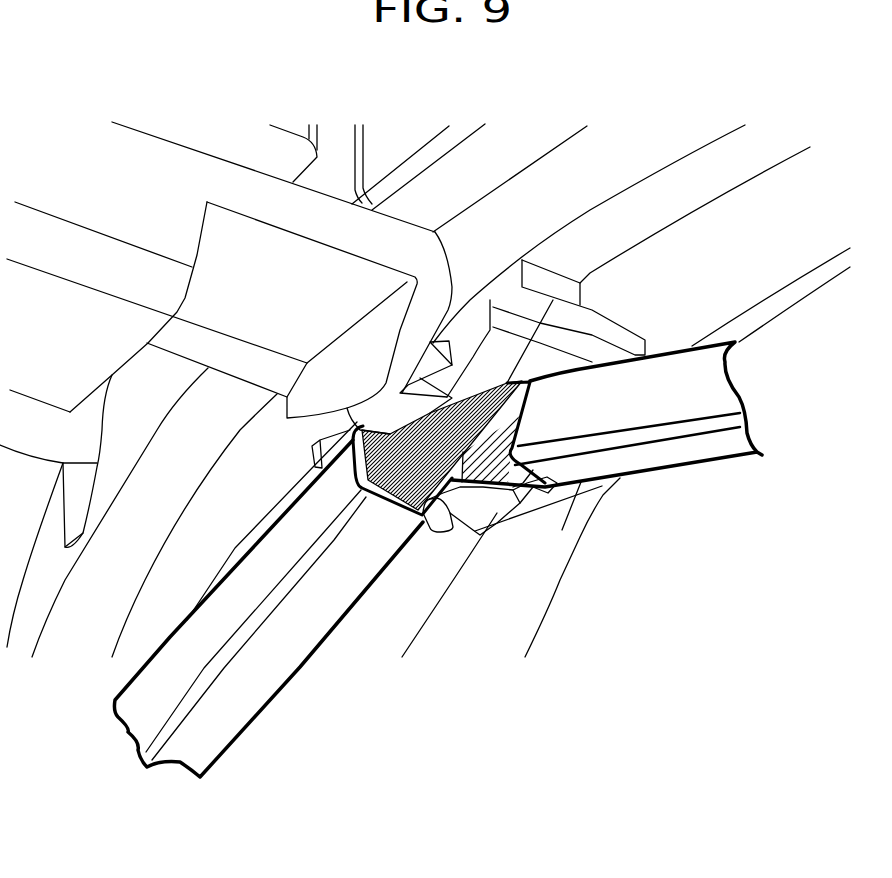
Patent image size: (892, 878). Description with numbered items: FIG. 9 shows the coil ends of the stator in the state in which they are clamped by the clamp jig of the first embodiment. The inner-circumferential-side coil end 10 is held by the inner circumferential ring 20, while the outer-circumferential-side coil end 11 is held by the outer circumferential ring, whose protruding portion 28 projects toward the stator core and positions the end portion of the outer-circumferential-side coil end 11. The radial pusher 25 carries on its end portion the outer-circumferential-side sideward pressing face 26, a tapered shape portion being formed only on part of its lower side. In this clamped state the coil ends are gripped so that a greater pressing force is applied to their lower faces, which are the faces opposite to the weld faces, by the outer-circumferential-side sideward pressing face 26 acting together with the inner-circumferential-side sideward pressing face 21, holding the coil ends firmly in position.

The inner-circumferential-side coil end 10 is at (516, 477).
The outer-circumferential-side coil end 11 is at (437, 535).
The inner circumferential ring 20 is at (716, 292).
The inner-circumferential-side sideward pressing face 21 is at (482, 495).
The radial pusher 25 is at (183, 167).
The outer-circumferential-side sideward pressing face 26 is at (311, 447).
The protruding portion 28 is at (490, 302).